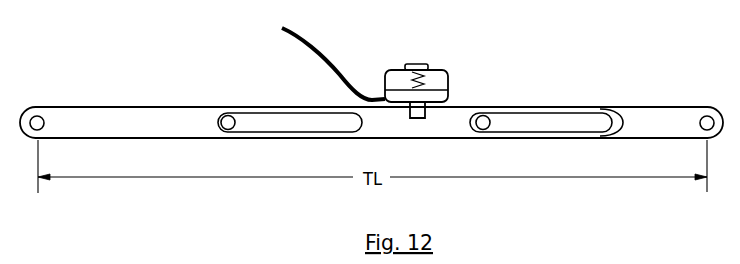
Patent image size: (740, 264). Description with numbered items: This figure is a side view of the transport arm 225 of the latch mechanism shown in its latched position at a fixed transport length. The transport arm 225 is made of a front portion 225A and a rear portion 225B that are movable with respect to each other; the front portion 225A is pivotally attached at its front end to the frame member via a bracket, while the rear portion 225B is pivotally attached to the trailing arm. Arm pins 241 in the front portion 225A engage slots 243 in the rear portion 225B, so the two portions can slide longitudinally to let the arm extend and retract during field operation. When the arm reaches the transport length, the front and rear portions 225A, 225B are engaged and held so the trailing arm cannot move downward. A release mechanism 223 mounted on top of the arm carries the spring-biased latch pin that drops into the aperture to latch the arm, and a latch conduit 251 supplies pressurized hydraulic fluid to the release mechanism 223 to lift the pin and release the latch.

The transport arm 225 is at (158, 160).
The front portion 225A is at (63, 107).
The rear portion 225B is at (667, 107).
The arm pins 241 is at (247, 111).
The slots 243 is at (527, 120).
The release mechanism 223 is at (449, 72).
The latch conduit 251 is at (310, 40).